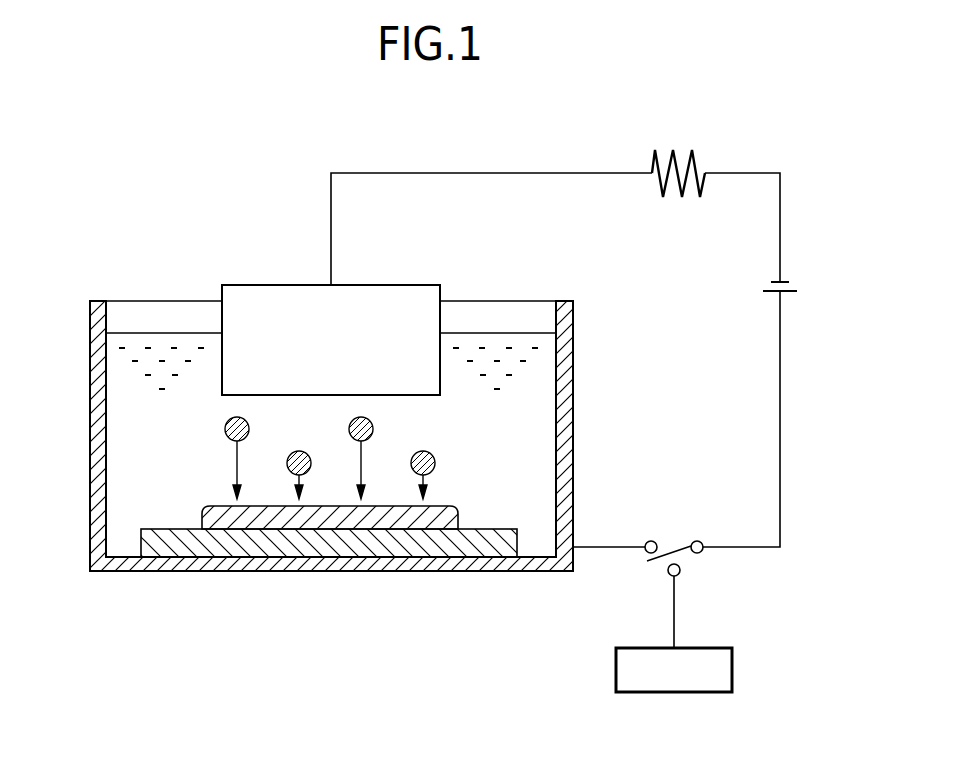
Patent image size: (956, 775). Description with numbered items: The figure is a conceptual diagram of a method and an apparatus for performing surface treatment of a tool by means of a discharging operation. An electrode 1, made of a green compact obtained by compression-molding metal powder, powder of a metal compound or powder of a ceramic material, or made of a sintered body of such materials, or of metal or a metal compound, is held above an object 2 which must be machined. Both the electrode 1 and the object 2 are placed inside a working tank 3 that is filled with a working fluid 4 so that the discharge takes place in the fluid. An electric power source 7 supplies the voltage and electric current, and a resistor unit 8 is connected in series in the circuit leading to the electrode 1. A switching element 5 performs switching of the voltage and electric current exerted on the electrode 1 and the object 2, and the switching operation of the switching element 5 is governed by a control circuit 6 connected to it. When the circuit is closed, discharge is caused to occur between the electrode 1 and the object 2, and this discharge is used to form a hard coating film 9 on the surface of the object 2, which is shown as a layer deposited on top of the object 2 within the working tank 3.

The electrode 1 is at (287, 284).
The object which must be machined 2 is at (183, 545).
The working tank 3 is at (97, 300).
The working fluid 4 is at (118, 452).
The switching element 5 is at (686, 562).
The control circuit 6 is at (672, 695).
The electric power source 7 is at (791, 278).
The resistor unit 8 is at (673, 148).
The hard coating film 9 is at (340, 525).